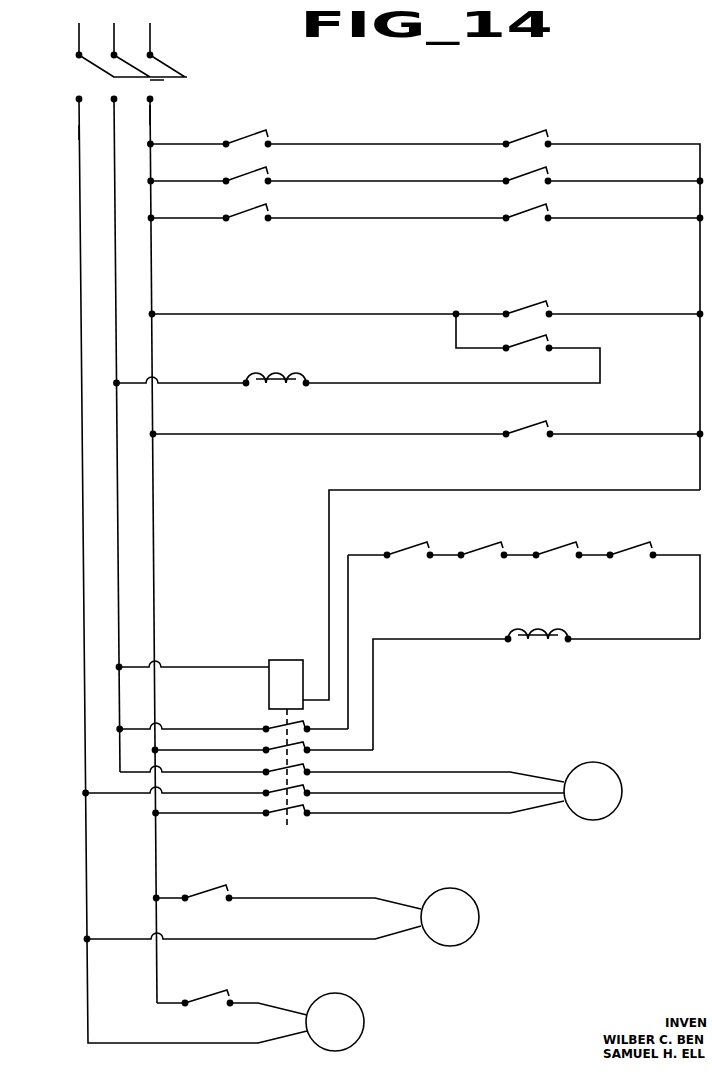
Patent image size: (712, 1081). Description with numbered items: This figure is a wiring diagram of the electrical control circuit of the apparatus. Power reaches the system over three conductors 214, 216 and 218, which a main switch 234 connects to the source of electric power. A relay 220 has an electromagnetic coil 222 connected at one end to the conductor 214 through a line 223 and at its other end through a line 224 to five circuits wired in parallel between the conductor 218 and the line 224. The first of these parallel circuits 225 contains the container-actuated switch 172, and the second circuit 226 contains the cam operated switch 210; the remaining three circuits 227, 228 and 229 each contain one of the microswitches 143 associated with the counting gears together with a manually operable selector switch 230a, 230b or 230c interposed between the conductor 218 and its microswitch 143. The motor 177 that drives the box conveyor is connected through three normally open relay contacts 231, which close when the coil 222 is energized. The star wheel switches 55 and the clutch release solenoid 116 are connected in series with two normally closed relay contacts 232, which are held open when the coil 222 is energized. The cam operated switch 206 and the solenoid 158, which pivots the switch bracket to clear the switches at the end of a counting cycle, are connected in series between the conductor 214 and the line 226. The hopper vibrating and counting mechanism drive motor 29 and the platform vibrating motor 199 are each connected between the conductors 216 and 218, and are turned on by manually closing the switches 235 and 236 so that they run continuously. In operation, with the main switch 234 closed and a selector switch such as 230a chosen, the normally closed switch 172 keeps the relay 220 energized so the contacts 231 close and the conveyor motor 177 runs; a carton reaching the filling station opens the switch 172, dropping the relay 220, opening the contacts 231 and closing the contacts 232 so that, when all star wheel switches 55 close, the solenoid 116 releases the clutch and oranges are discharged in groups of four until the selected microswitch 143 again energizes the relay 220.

The main switch 234 is at (170, 64).
The conductor 214 is at (113, 120).
The conductor 216 is at (79, 131).
The conductor 218 is at (151, 119).
The circuit 229 is at (353, 144).
The circuit 228 is at (346, 181).
The circuit 227 is at (346, 218).
The selector switch 230a is at (245, 148).
The selector switch 230b is at (245, 185).
The selector switch 230c is at (245, 222).
The microswitch 143 is at (528, 138).
The circuit 226 is at (292, 314).
The cam operated switch 210 is at (533, 305).
The cam operated switch 206 is at (535, 345).
The solenoid 158 is at (277, 374).
The circuit 225 is at (280, 434).
The container-actuated switch 172 is at (535, 427).
The line 224 is at (458, 490).
The star wheel switch 55 is at (488, 550).
The clutch release solenoid 116 is at (538, 633).
The line 223 is at (206, 666).
The electromagnetic coil 222 is at (286, 682).
The relay 220 is at (275, 720).
The relay contacts 232 is at (276, 731).
The relay contacts 231 is at (276, 774).
The motor 177 is at (612, 792).
The switch 235 is at (210, 893).
The hopper vibrating and counting mechanism drive motor 29 is at (478, 917).
The switch 236 is at (210, 997).
The platform vibrating motor 199 is at (356, 1023).